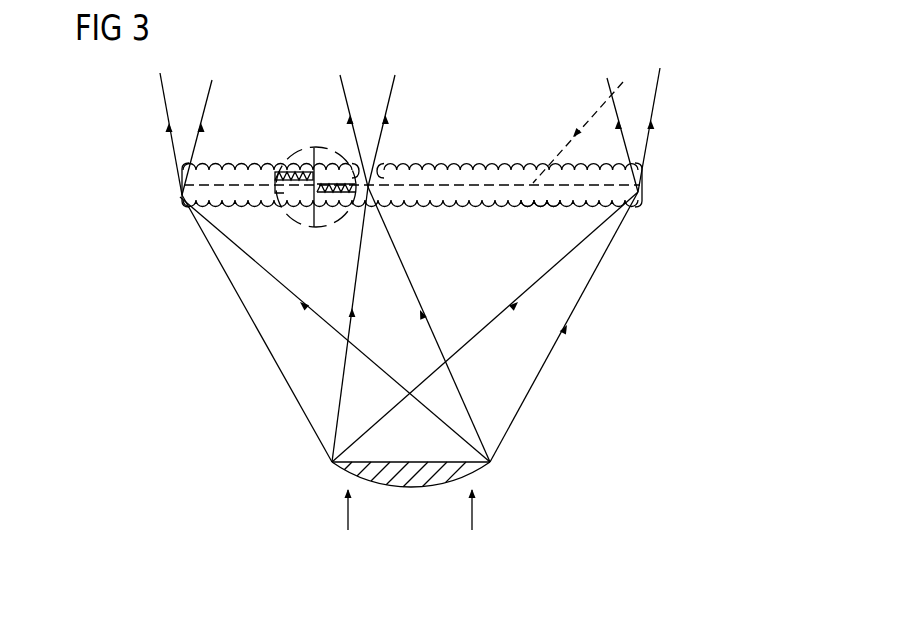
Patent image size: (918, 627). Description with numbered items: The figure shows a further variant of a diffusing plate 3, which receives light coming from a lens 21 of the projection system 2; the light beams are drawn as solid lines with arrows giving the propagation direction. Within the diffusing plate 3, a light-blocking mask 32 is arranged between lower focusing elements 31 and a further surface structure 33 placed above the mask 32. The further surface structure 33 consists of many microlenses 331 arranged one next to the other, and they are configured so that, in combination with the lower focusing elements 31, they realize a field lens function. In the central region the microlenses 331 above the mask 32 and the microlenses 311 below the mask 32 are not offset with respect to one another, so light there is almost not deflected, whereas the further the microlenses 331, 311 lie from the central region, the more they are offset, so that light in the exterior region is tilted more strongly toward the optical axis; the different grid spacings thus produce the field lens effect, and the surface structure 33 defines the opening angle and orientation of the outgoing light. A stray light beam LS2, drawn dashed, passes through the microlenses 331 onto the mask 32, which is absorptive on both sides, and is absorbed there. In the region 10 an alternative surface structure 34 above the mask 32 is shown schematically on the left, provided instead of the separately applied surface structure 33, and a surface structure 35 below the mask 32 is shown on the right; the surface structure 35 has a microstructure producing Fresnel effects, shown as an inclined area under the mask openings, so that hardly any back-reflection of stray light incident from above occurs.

The projection system 2 is at (492, 495).
The lens 21 is at (463, 466).
The diffusing plate 3 is at (465, 180).
The focusing elements 31 is at (603, 203).
The microlenses 311 is at (541, 207).
The light-blocking mask 32 is at (653, 165).
The further surface structure 33 is at (410, 120).
The microlenses 331 is at (450, 163).
The surface structure 34 is at (302, 162).
The surface structure 35 is at (327, 207).
The region 10 is at (241, 169).
The stray light beam LS2 is at (598, 110).